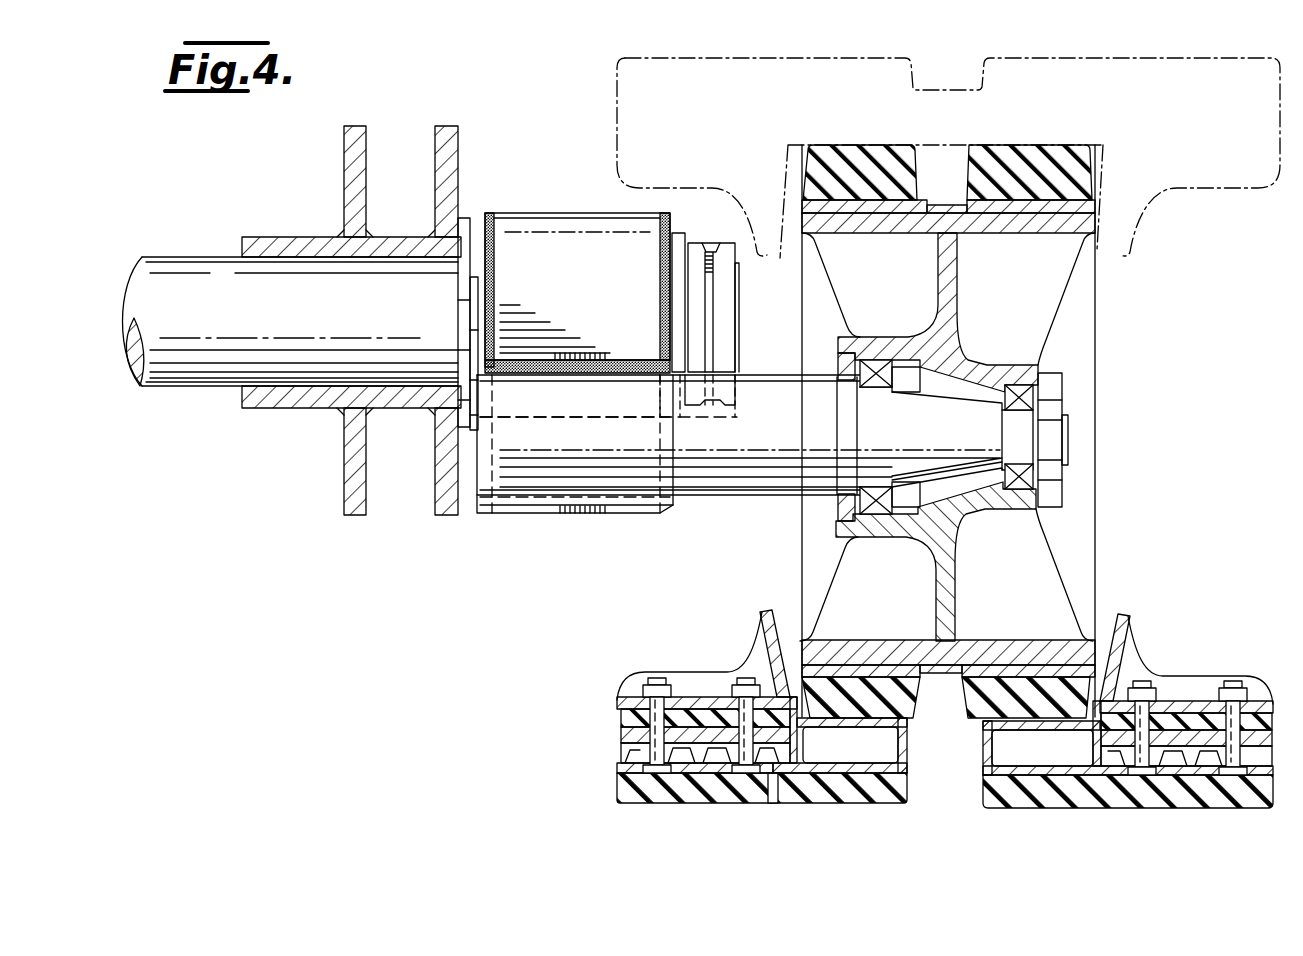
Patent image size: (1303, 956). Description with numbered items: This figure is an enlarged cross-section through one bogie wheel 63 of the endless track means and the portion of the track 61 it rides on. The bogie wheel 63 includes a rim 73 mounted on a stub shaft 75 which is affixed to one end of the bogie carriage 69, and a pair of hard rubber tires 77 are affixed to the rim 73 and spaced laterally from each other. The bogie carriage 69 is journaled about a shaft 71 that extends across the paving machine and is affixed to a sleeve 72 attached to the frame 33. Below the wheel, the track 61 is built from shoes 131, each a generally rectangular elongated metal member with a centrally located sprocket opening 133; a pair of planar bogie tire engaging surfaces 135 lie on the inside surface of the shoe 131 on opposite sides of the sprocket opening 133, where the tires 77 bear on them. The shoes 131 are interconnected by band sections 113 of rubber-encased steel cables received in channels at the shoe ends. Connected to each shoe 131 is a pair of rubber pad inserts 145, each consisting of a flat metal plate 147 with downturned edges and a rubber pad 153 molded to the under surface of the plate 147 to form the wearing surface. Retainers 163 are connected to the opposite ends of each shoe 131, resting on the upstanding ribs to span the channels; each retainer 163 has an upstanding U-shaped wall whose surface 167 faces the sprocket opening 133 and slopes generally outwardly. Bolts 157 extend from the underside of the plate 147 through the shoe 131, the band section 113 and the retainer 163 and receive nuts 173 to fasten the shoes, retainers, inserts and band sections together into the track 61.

The frame 33 is at (440, 128).
The track 61 is at (1152, 46).
The bogie wheel 63 is at (1108, 556).
The bogie carriage 69 is at (582, 228).
The shaft 71 is at (183, 386).
The sleeve 72 is at (303, 409).
The rim 73 is at (952, 298).
The stub shaft 75 is at (768, 487).
The hard rubber tire 77 is at (993, 690).
The band section 113 is at (621, 716).
The shoe 131 is at (772, 766).
The sprocket opening 133 is at (900, 762).
The bogie tire engaging surface 135 is at (885, 690).
The rubber pad insert 145 is at (725, 820).
The plate 147 is at (858, 772).
The rubber pad 153 is at (700, 803).
The bolt 157 is at (640, 752).
The retainer 163 is at (710, 660).
The surface 167 is at (785, 622).
The nut 173 is at (645, 688).